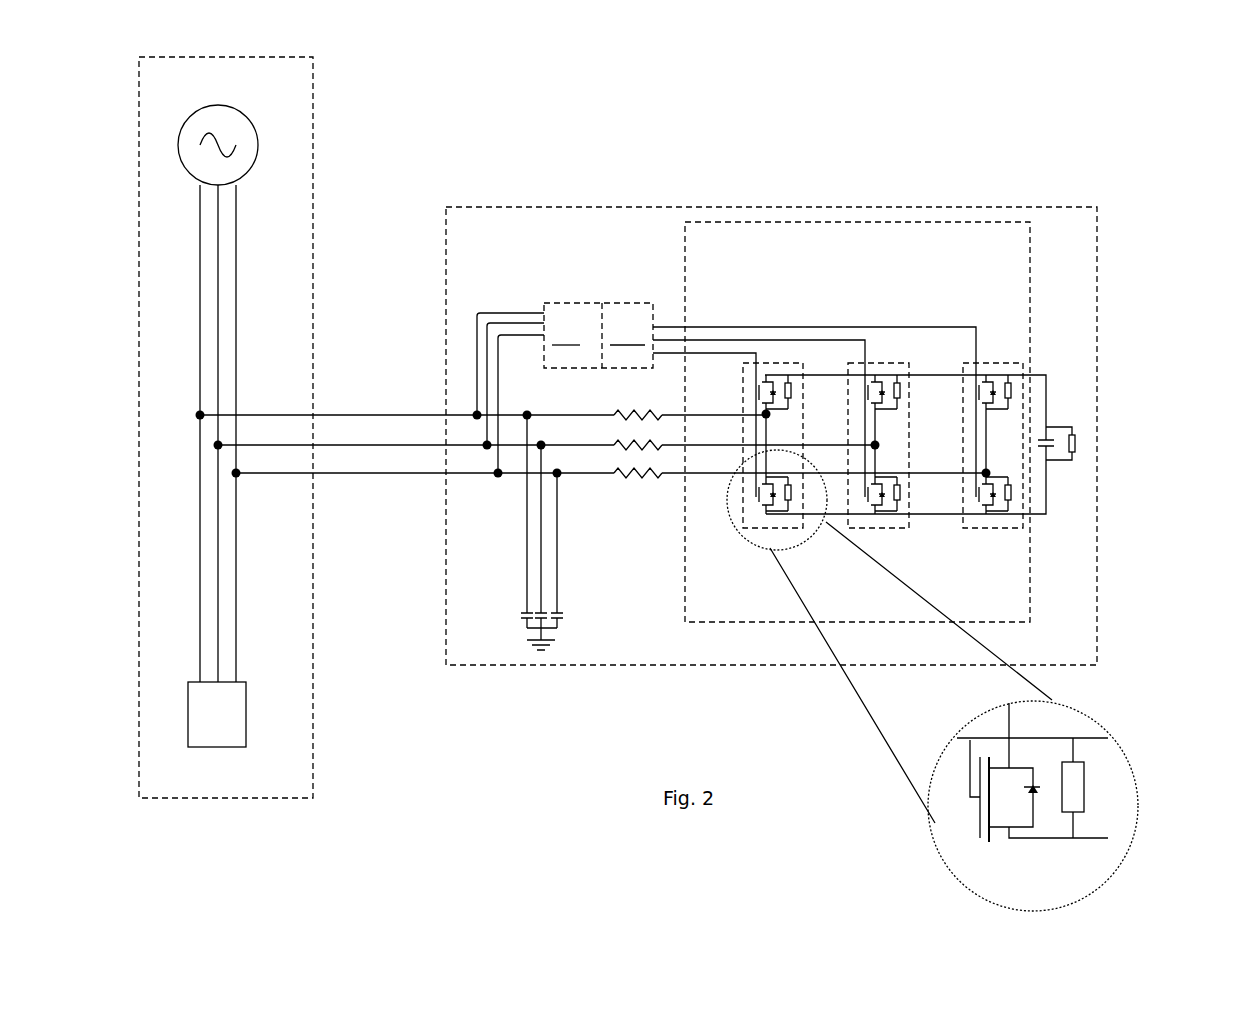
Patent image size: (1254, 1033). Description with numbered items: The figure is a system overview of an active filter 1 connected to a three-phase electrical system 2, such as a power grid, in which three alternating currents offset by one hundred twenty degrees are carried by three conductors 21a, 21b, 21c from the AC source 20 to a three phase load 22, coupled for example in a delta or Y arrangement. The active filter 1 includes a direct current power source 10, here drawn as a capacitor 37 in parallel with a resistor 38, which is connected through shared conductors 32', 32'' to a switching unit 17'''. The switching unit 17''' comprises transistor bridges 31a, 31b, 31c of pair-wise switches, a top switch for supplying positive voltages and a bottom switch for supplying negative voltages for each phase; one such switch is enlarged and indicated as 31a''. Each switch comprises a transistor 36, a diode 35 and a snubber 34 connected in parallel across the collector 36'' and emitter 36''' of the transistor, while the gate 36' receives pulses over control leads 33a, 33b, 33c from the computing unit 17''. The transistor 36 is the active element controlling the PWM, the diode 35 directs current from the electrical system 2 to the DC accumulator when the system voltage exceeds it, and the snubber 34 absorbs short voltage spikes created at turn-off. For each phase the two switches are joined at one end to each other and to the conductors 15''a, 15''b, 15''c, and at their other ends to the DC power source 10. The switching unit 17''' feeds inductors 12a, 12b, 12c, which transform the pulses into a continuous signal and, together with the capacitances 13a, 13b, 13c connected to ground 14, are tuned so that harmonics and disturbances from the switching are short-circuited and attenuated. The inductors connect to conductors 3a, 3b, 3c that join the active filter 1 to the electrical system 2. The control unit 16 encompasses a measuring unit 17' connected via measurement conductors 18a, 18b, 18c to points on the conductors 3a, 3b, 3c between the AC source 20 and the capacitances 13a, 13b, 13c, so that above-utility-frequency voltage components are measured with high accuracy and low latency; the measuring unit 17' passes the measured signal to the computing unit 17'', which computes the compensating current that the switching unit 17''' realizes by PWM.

The active filter 1 is at (777, 207).
The electrical system 2 is at (245, 57).
The conductor 3a is at (405, 404).
The conductor 3b is at (414, 435).
The conductor 3c is at (423, 463).
The direct current power source 10 is at (1116, 384).
The inductor 12a is at (638, 403).
The inductor 12b is at (638, 433).
The inductor 12c is at (638, 461).
The capacitance 13a is at (563, 612).
The capacitance 13b is at (541, 536).
The capacitance 13c is at (557, 550).
The ground connection 14 is at (553, 640).
The conductor 15''a is at (714, 402).
The conductor 15''b is at (768, 432).
The conductor 15''c is at (824, 460).
The control unit 16 is at (591, 300).
The measuring unit 17' is at (577, 335).
The computing unit 17'' is at (628, 334).
The switching unit 17''' is at (833, 422).
The measurement conductor 18a is at (477, 383).
The measurement conductor 18b is at (487, 323).
The measurement conductor 18c is at (499, 338).
The AC source 20 is at (259, 152).
The conductor 21a is at (199, 327).
The conductor 21b is at (219, 294).
The conductor 21c is at (237, 365).
The three phase load 22 is at (247, 720).
The transistor bridge 31a is at (849, 408).
The transistor bridge 31b is at (873, 363).
The transistor bridge 31c is at (1010, 363).
The switch 31a'' is at (1029, 795).
The conductor 32' is at (854, 384).
The conductor 32'' is at (857, 495).
The control lead 33a is at (752, 353).
The control lead 33b is at (728, 340).
The control lead 33c is at (713, 326).
The snubber 34 is at (1084, 787).
The diode 35 is at (1047, 738).
The transistor 36 is at (912, 804).
The gate 36' is at (908, 797).
The collector 36'' is at (940, 740).
The emitter 36''' is at (912, 812).
The capacitor 37 is at (1046, 427).
The resistor 38 is at (1075, 443).